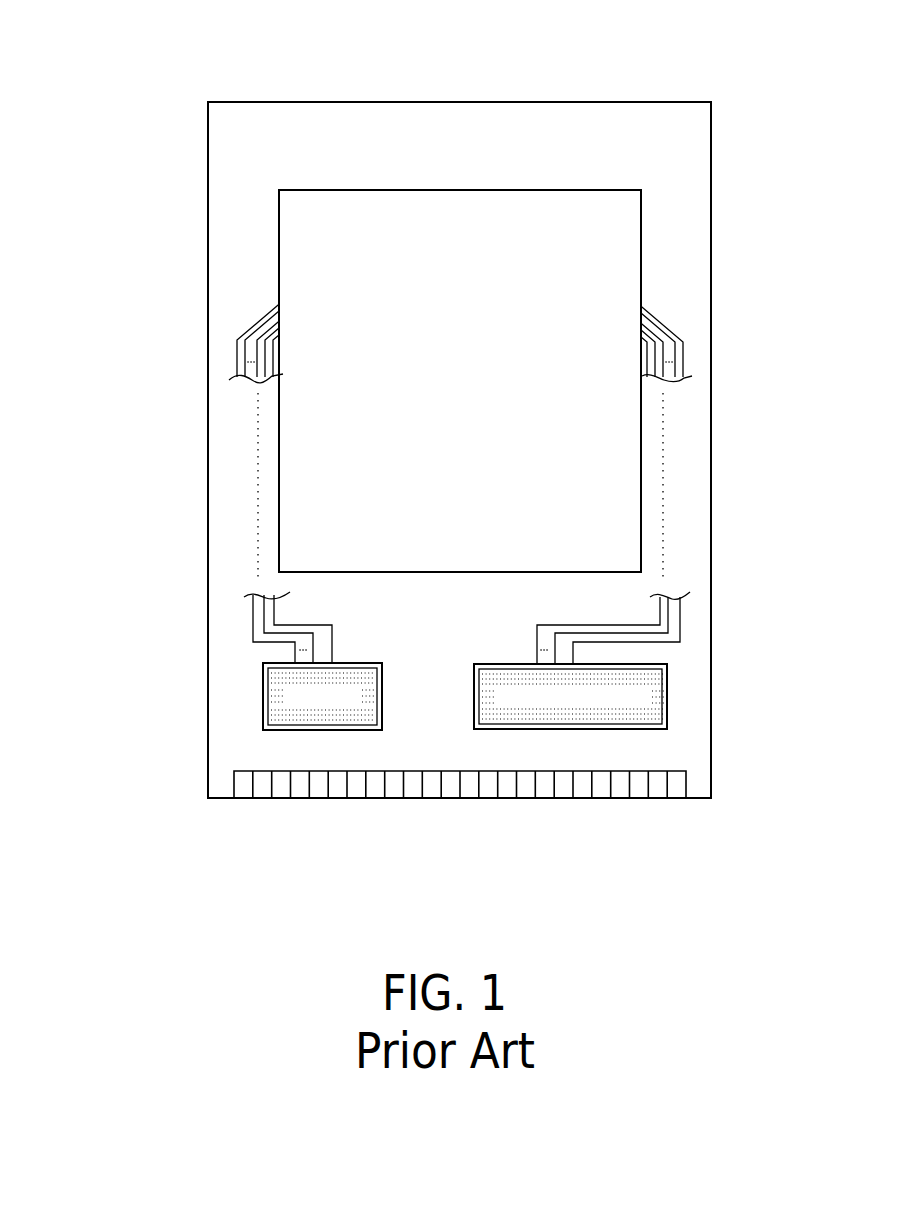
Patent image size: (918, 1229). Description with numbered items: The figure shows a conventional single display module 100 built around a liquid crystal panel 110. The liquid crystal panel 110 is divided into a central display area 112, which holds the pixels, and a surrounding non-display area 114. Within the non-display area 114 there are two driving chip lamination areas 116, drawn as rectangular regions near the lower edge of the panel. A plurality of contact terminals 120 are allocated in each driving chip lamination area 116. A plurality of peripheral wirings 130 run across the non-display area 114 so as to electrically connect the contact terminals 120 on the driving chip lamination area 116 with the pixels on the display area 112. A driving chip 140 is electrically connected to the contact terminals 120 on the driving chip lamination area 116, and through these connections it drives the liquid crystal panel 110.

The single display module 100 is at (806, 851).
The liquid crystal panel 110 is at (200, 160).
The display area 112 is at (566, 220).
The non-display area 114 is at (672, 262).
The driving chip lamination area 116 is at (263, 670).
The contact terminals 120 is at (263, 693).
The peripheral wirings 130 is at (256, 326).
The driving chip 140 is at (263, 716).